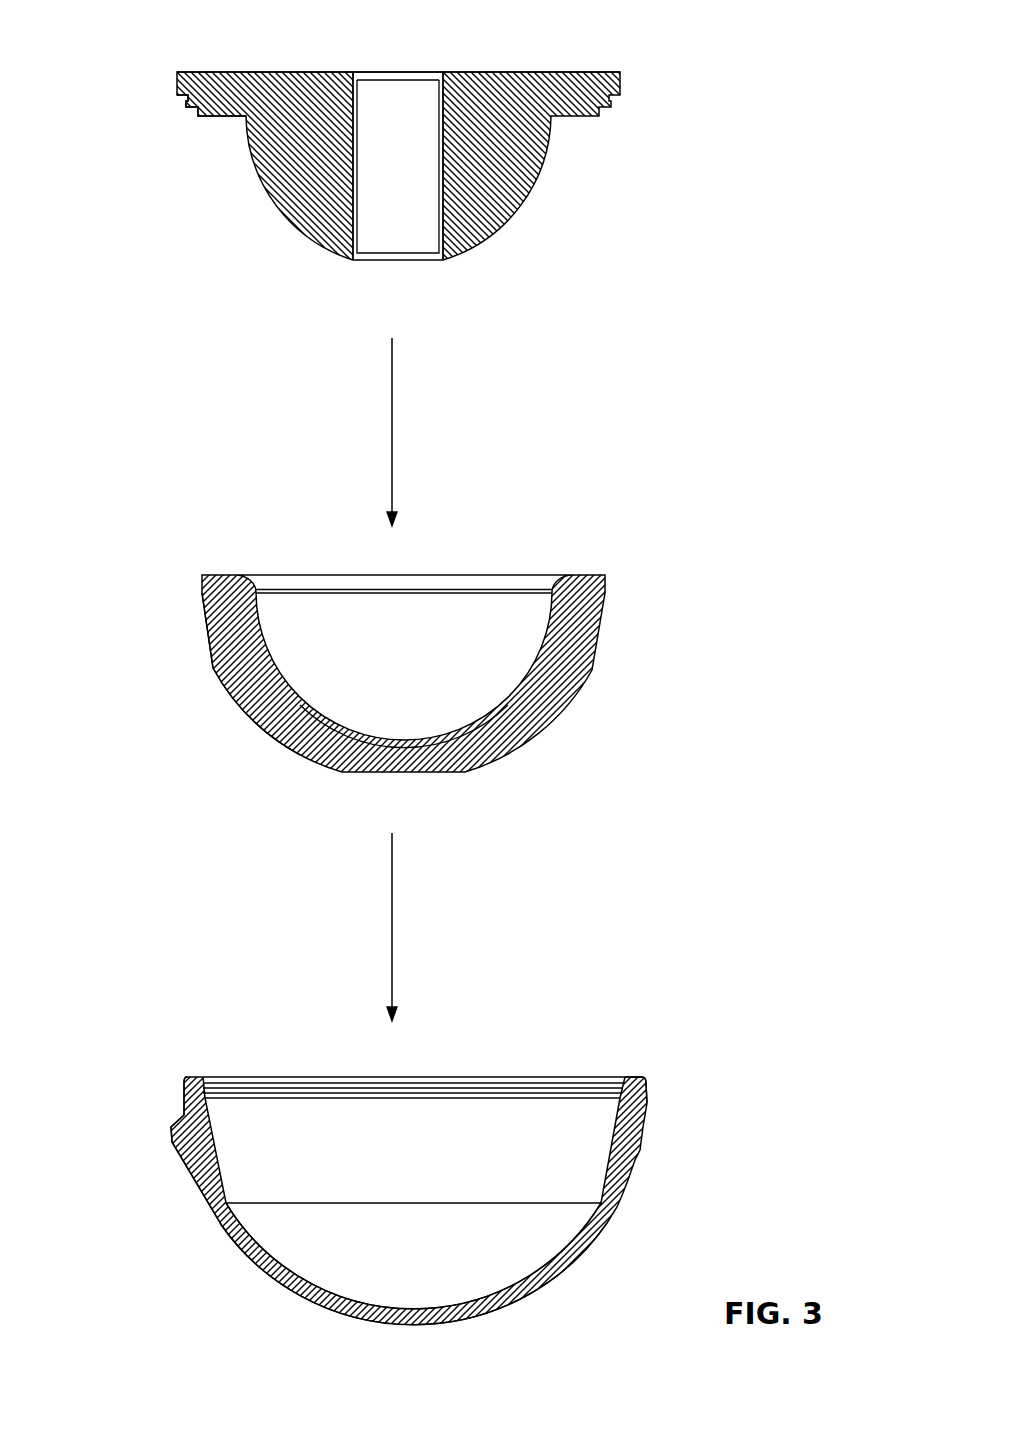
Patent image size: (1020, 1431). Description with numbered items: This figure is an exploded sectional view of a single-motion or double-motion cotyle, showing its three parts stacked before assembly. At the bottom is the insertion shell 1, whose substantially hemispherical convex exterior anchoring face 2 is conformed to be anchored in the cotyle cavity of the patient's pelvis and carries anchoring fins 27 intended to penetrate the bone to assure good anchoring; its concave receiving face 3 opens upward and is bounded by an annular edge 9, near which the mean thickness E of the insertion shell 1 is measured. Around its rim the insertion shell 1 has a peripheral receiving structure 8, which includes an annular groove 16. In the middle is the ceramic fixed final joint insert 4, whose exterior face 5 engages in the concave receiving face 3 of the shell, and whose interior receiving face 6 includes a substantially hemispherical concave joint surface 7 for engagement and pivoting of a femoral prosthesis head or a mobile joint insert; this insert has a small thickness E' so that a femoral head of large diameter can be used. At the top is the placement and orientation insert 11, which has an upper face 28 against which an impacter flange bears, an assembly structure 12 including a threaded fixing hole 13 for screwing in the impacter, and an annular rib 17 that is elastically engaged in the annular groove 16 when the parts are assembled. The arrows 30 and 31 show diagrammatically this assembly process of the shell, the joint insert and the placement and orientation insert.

The insertion shell 1 is at (648, 1180).
The exterior anchoring face 2 is at (223, 1226).
The concave receiving face 3 is at (284, 1246).
The ceramic fixed final joint insert 4 is at (624, 612).
The exterior face 5 is at (212, 648).
The interior receiving face 6 is at (277, 563).
The concave joint surface 7 is at (377, 734).
The peripheral receiving structure 8 is at (163, 1088).
The annular edge 9 is at (189, 1079).
The placement and orientation insert 11 is at (630, 128).
The assembly structure 12 is at (412, 74).
The threaded fixing hole 13 is at (377, 237).
The annular groove 16 is at (647, 1082).
The annular rib 17 is at (188, 110).
The anchoring fins 27 is at (176, 1138).
The upper face 28 is at (225, 62).
The assembly arrow 30 is at (392, 930).
The assembly arrow 31 is at (392, 427).
The thickness of the insertion shell E is at (641, 1102).
The thickness of the joint insert E' is at (220, 623).